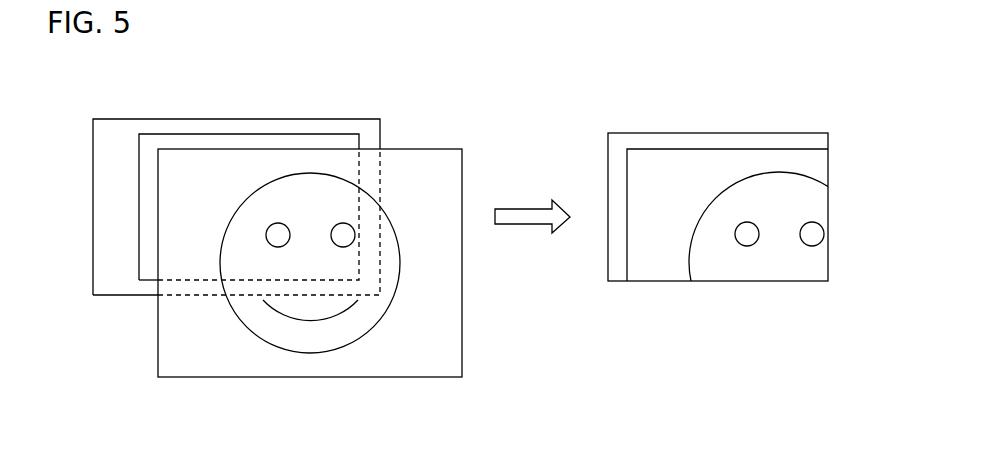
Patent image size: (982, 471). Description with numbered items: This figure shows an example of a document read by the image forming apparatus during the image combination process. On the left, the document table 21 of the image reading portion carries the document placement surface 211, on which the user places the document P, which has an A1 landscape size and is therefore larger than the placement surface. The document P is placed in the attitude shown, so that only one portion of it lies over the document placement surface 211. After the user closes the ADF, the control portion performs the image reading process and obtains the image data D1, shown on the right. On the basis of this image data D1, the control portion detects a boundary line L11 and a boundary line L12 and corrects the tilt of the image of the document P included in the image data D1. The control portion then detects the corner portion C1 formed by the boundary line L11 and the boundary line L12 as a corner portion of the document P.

The document table 21 is at (113, 119).
The document placement surface 211 is at (169, 134).
The document P is at (158, 344).
The image data D1 is at (724, 283).
The boundary line L11 is at (715, 147).
The corner portion C1 is at (625, 145).
The boundary line L12 is at (625, 255).